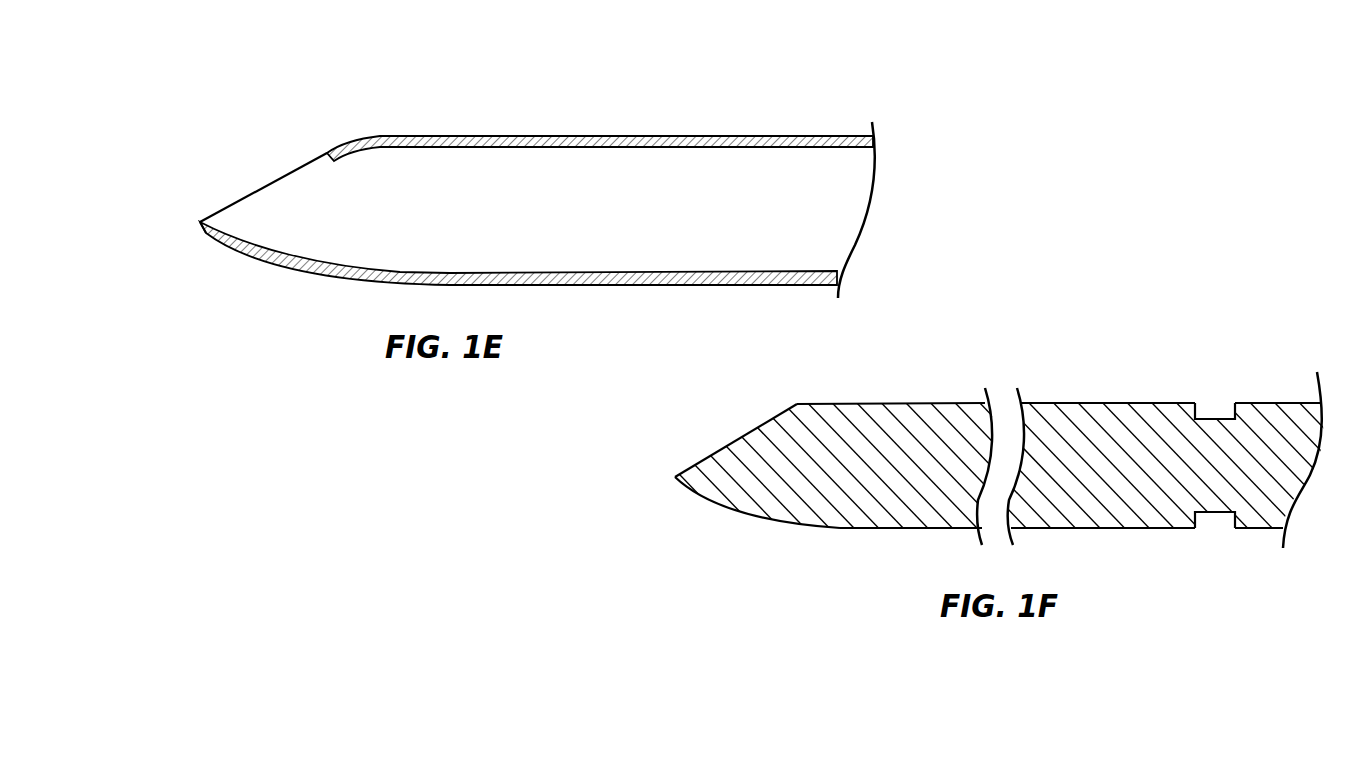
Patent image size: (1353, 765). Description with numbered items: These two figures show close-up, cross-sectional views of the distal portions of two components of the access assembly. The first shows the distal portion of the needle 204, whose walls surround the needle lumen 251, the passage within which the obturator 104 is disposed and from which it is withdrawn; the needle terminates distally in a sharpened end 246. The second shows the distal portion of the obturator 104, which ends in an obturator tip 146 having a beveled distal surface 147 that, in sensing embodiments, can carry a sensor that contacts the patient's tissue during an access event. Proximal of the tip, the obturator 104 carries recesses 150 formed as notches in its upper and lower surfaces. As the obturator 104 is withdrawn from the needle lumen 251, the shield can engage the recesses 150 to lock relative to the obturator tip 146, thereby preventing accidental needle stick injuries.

In FIG. 1E, the needle 204 is at (668, 115).
In FIG. 1E, the distal tip of sheath 246 is at (200, 223).
In FIG. 1E, the needle lumen 251 is at (377, 238).
In FIG. 1F, the obturator 104 is at (1243, 358).
In FIG. 1F, the distal tip 146 is at (675, 477).
In FIG. 1F, the beveled distal surface 147 is at (743, 437).
In FIG. 1F, the recesses 150 is at (1218, 417).